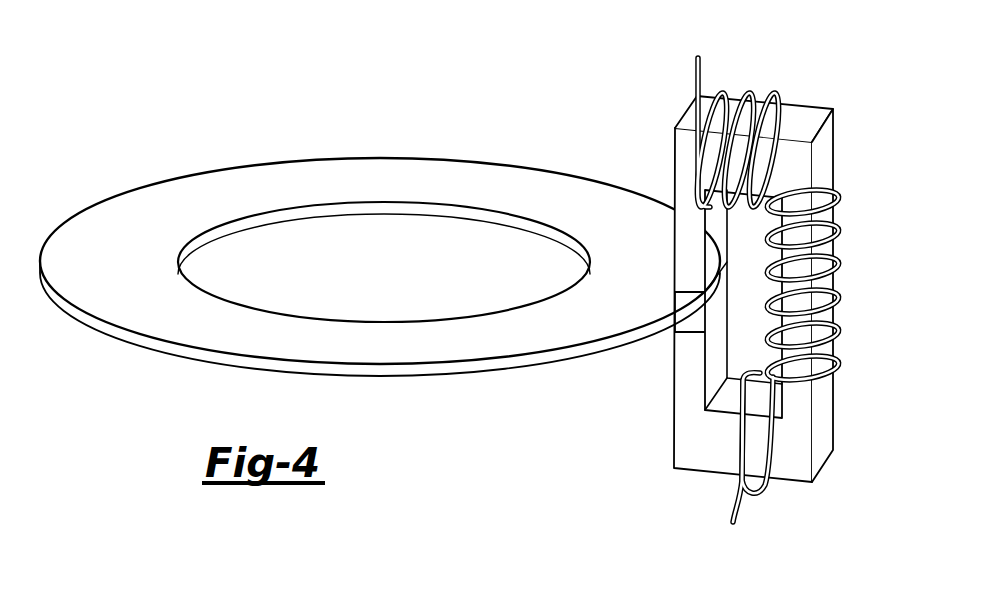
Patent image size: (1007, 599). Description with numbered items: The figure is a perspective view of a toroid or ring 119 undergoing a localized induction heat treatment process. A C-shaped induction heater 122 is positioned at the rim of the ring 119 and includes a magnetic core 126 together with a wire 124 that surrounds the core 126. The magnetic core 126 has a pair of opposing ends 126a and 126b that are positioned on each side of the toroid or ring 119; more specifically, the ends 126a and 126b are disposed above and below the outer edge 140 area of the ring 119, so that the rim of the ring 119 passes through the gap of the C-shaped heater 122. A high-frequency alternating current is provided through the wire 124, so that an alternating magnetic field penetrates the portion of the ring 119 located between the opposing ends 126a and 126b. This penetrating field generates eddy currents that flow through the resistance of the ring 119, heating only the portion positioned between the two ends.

The toroid or ring 119 is at (163, 205).
The outer edge 140 is at (287, 162).
The C-shaped induction heater 122 is at (713, 267).
The wire 124 is at (700, 73).
The magnetic core 126 is at (732, 271).
The opposing end 126a is at (690, 294).
The opposing end 126b is at (704, 302).